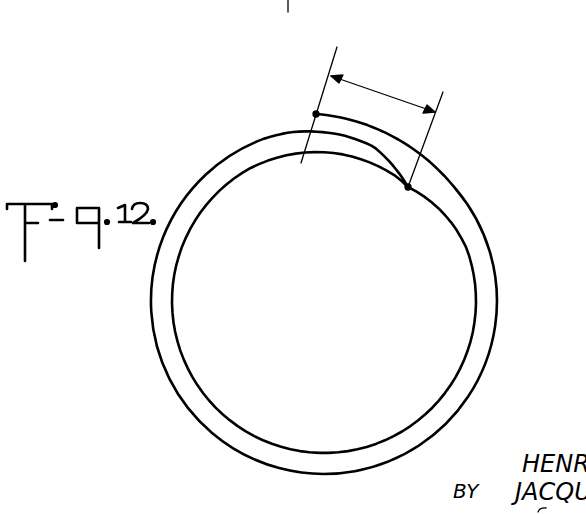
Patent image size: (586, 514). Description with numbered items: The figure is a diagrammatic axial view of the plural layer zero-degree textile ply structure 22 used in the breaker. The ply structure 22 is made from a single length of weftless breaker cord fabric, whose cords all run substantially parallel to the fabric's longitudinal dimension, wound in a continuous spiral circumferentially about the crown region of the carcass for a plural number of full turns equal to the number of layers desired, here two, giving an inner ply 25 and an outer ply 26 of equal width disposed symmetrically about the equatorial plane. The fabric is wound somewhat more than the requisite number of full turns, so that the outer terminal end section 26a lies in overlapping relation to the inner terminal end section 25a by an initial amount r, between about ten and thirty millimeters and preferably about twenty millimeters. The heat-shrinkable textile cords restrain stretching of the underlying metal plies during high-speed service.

The ply structure 22 is at (358, 260).
The inner ply 25 is at (180, 242).
The inner terminal end section 25a is at (360, 160).
The outer ply 26 is at (231, 155).
The outer terminal end section 26a is at (412, 147).